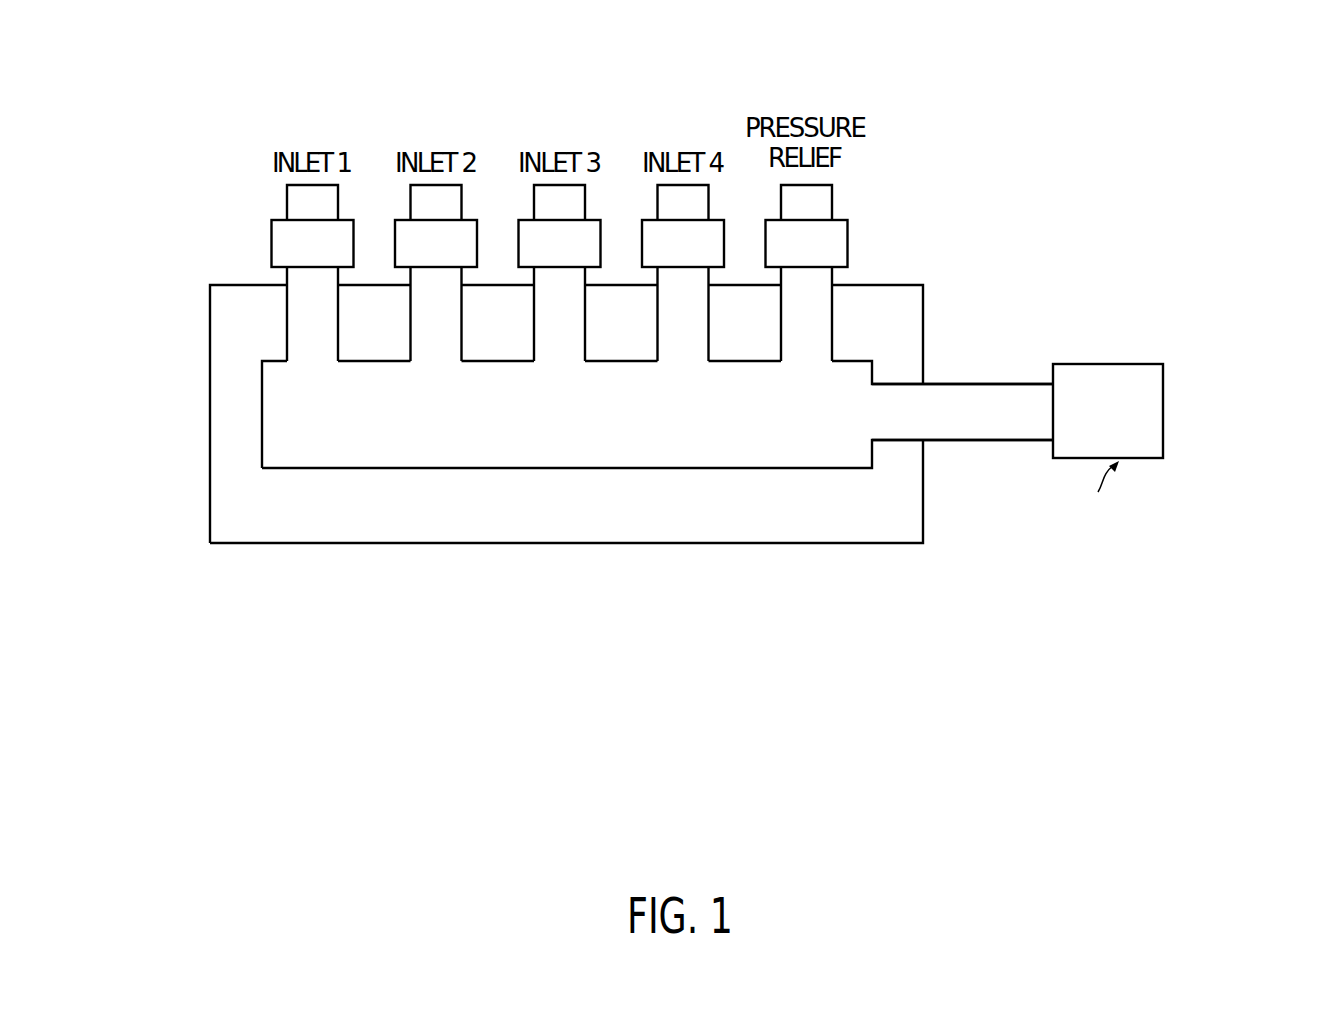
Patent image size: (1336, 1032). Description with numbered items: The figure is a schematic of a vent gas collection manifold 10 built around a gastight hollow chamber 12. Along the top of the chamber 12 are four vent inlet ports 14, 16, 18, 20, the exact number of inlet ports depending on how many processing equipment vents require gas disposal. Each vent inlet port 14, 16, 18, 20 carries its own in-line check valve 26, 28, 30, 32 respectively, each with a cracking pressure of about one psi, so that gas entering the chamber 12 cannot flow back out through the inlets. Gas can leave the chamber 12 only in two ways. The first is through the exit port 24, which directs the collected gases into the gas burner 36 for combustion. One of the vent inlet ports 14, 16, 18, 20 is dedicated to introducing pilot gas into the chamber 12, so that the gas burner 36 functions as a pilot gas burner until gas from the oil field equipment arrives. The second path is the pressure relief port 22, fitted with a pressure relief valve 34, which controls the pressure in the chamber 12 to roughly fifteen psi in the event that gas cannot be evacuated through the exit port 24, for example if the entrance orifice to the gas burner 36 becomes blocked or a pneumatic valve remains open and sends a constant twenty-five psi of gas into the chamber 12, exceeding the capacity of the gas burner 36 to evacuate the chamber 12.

The vent gas collection manifold 10 is at (683, 70).
The gastight hollow chamber 12 is at (547, 428).
The vent inlet port 14 is at (287, 320).
The vent inlet port 16 is at (408, 327).
The vent inlet port 18 is at (532, 343).
The vent inlet port 20 is at (708, 322).
The pressure relief port 22 is at (832, 342).
The exit port 24 is at (877, 411).
The in-line check valve 26 is at (298, 263).
The in-line check valve 28 is at (451, 263).
The in-line check valve 30 is at (545, 263).
The in-line check valve 32 is at (698, 263).
The pressure relief valve 34 is at (792, 263).
The gas burner 36 is at (1123, 424).